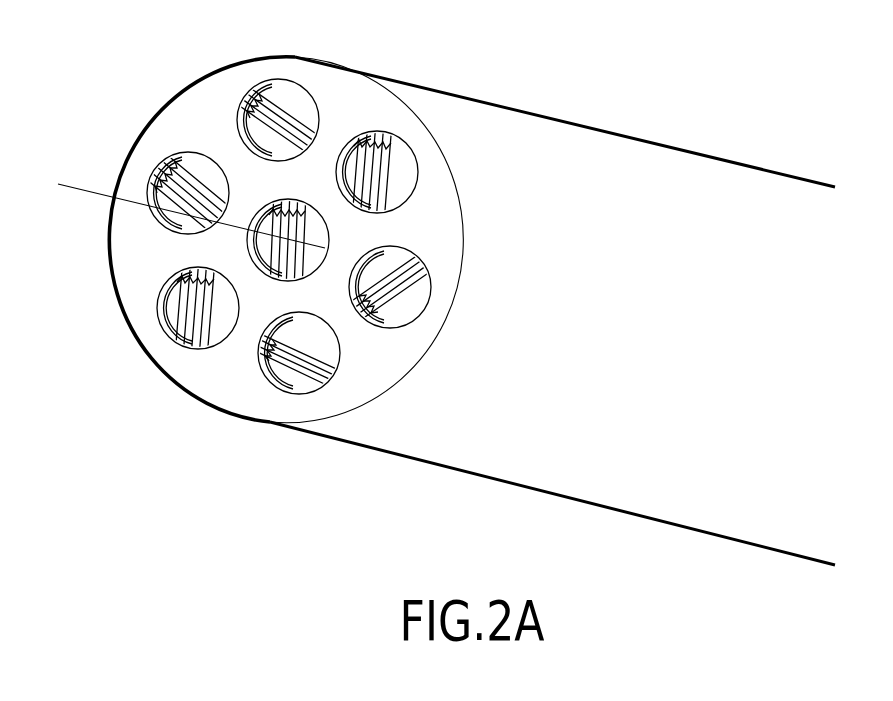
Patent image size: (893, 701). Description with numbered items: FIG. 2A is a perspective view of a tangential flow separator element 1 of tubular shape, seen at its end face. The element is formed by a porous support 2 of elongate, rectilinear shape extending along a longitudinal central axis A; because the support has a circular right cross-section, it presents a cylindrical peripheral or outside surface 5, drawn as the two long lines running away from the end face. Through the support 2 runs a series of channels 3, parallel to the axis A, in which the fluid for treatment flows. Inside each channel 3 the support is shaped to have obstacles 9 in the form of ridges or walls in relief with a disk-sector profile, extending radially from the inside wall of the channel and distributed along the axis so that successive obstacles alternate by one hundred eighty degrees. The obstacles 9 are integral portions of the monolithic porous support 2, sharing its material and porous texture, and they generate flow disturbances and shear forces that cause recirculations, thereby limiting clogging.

The tangential flow separator element 1 is at (98, 95).
The porous support 2 is at (183, 112).
The channels 3 is at (185, 206).
The peripheral or outside surface 5 is at (591, 118).
The obstacles 9 is at (248, 138).
The longitudinal central axis A is at (70, 185).